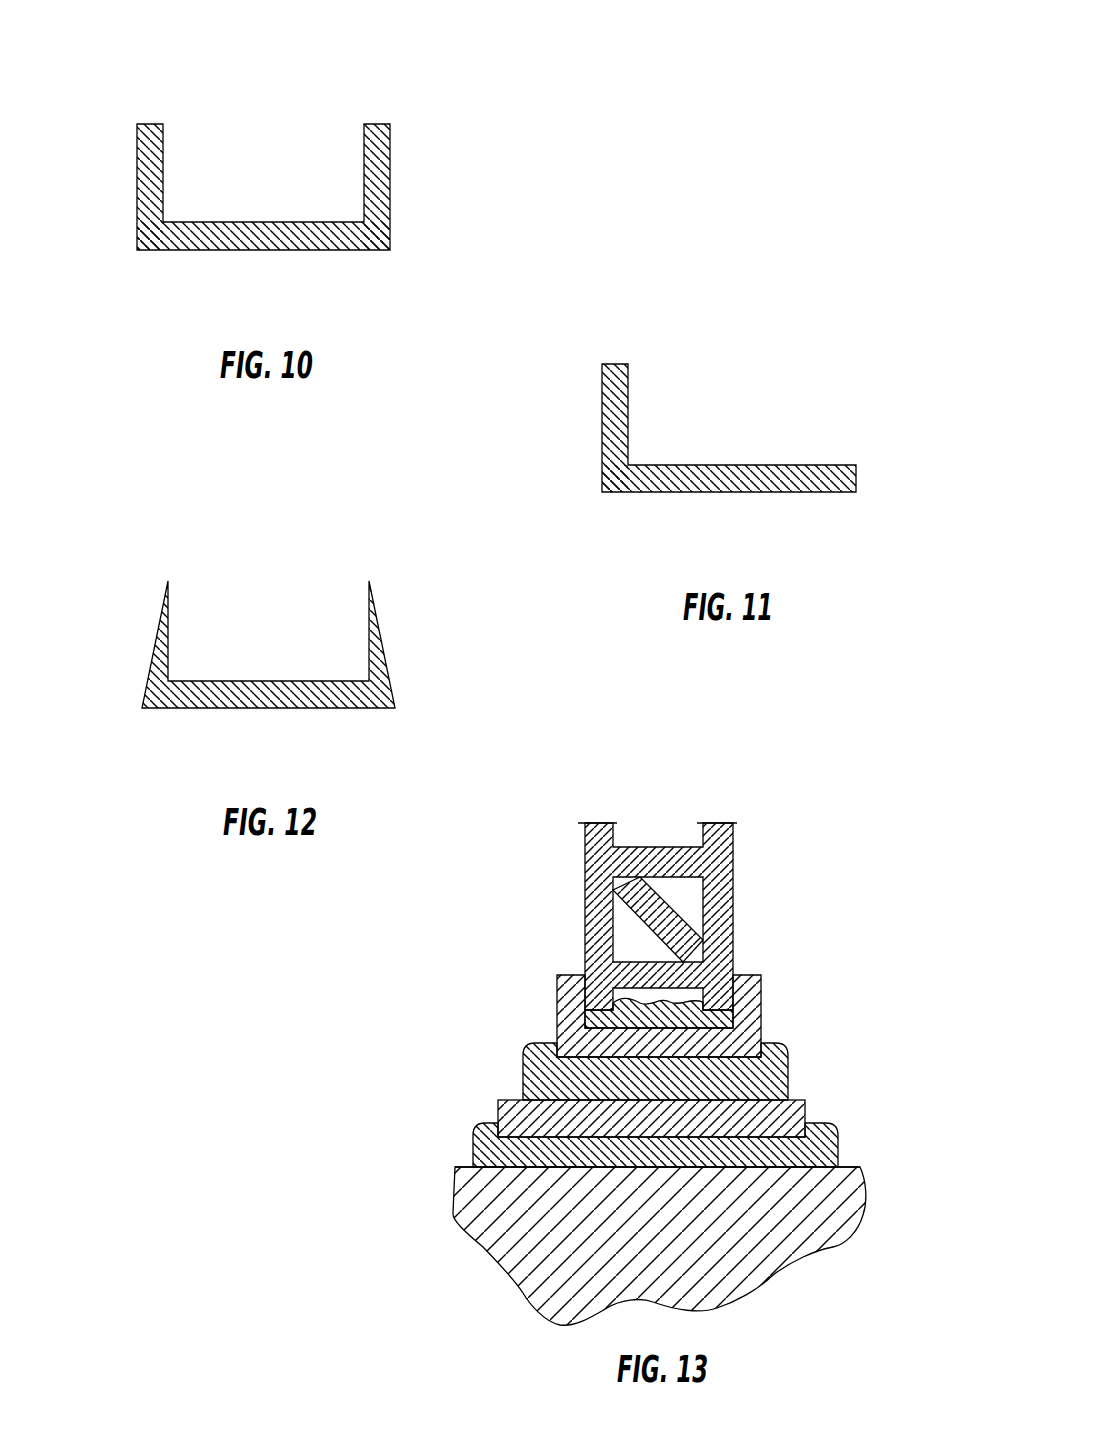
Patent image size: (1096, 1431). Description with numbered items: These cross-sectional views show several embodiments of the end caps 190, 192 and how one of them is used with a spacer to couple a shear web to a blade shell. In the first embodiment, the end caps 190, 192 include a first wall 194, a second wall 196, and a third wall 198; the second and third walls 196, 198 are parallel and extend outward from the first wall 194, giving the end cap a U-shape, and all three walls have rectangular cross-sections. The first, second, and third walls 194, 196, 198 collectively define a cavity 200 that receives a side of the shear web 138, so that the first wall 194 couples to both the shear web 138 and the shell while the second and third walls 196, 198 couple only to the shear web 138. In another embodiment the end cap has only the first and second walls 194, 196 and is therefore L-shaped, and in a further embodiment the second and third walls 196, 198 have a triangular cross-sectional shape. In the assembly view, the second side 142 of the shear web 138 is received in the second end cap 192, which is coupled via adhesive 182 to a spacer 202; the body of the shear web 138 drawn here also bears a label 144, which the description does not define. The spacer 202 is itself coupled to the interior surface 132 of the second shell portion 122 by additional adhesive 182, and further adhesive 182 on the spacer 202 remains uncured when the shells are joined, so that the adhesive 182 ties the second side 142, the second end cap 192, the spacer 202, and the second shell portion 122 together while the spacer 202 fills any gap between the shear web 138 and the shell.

In FIG. 10, the first end cap 190 is at (257, 157).
In FIG. 11, the first end cap 190 is at (689, 406).
In FIG. 12, the first end cap 190 is at (241, 626).
In FIG. 10, the second end cap 192 is at (257, 157).
In FIG. 11, the second end cap 192 is at (689, 406).
In FIG. 12, the second end cap 192 is at (241, 626).
In FIG. 13, the second end cap 192 is at (761, 1022).
In FIG. 10, the first wall 194 is at (285, 250).
In FIG. 11, the first wall 194 is at (748, 492).
In FIG. 12, the first wall 194 is at (290, 708).
In FIG. 10, the second wall 196 is at (137, 163).
In FIG. 11, the second wall 196 is at (602, 404).
In FIG. 12, the second wall 196 is at (160, 620).
In FIG. 10, the third wall 198 is at (390, 163).
In FIG. 12, the third wall 198 is at (378, 620).
In FIG. 10, the cavity 200 is at (314, 127).
In FIG. 11, the cavity 200 is at (777, 369).
In FIG. 12, the cavity 200 is at (319, 585).
In FIG. 13, the shear web 138 is at (656, 1012).
In FIG. 13, the body 144 is at (657, 847).
In FIG. 13, the second side 142 is at (606, 1007).
In FIG. 13, the adhesive 182 is at (642, 1002).
In FIG. 13, the spacer 202 is at (510, 1100).
In FIG. 13, the interior surface 132 is at (845, 1163).
In FIG. 13, the second shell portion 122 is at (850, 1242).